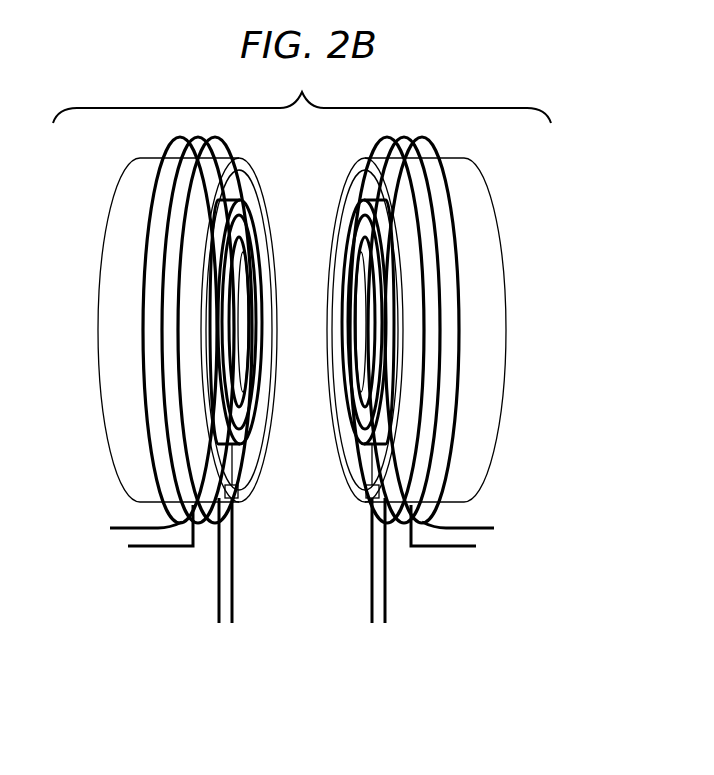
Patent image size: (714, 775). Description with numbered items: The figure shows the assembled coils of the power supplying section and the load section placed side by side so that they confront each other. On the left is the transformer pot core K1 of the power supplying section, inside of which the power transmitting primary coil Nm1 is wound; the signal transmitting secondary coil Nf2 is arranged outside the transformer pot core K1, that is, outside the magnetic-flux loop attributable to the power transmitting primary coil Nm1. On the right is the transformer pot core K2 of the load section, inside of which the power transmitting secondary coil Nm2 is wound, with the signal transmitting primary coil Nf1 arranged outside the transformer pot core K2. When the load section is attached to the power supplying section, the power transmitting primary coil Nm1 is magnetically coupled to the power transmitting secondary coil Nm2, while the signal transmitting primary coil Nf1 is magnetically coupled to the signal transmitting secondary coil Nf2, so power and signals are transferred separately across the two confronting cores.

The transformer pot core K1 is at (100, 245).
The transformer pot core K2 is at (500, 247).
The power transmitting primary coil Nm1 is at (234, 570).
The power transmitting secondary coil Nm2 is at (373, 607).
The signal transmitting primary coil Nf1 is at (445, 548).
The signal transmitting secondary coil Nf2 is at (158, 548).